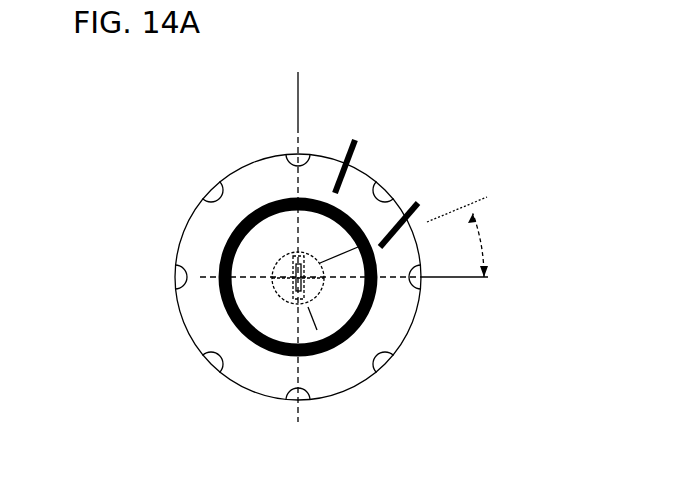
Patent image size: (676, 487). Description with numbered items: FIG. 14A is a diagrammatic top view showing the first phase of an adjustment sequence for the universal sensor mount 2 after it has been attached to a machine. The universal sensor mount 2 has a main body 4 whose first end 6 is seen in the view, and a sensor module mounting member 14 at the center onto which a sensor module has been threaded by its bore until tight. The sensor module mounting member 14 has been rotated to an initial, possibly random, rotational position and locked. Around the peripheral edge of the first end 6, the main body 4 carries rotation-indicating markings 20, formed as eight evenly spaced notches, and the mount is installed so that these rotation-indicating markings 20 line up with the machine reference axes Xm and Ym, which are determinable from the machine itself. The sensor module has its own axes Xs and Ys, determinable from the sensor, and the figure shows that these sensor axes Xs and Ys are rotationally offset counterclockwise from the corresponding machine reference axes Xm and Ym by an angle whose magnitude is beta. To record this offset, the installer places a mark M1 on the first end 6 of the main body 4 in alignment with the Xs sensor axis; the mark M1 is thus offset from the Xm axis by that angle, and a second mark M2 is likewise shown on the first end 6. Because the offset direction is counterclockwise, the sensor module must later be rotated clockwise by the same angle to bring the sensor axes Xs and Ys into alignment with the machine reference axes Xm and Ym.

The universal sensor mount 2 is at (289, 254).
The main body 4 is at (418, 317).
The first end 6 is at (195, 237).
The sensor module mounting member 14 is at (280, 262).
The rotation-indicating markings 20 is at (388, 357).
The mark M1 is at (415, 207).
The second mark M2 is at (352, 140).
The machine reference X axis Xm is at (366, 276).
The machine reference Y axis Ym is at (295, 228).
The sensor module X axis Xs is at (337, 246).
The sensor module Y axis Ys is at (326, 319).